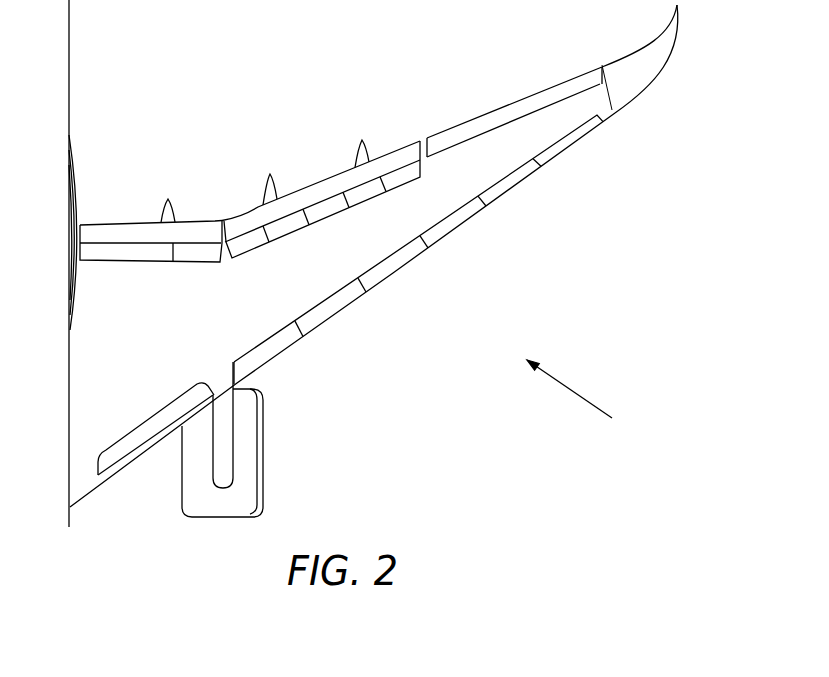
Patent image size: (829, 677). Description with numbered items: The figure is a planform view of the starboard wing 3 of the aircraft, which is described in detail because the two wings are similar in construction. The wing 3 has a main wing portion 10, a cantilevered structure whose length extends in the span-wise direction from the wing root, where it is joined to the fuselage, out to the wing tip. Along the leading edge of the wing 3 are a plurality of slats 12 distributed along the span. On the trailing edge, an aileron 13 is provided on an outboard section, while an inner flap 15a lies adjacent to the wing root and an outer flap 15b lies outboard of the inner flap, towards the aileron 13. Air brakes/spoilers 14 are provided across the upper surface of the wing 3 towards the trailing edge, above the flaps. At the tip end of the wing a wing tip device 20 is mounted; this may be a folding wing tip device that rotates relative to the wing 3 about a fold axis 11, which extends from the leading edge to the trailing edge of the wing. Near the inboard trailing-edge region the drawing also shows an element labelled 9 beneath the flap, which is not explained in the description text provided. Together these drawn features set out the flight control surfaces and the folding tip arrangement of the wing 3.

The starboard wing 3 is at (580, 401).
The flap track fairing 9 is at (203, 497).
The main wing portion 10 is at (423, 200).
The fold axis 11 is at (610, 102).
The slats 12 is at (510, 182).
The aileron 13 is at (530, 107).
The air brakes/spoilers 14 is at (245, 238).
The inner flap 15a is at (139, 228).
The outer flap 15b is at (323, 193).
The wing tip device 20 is at (648, 67).